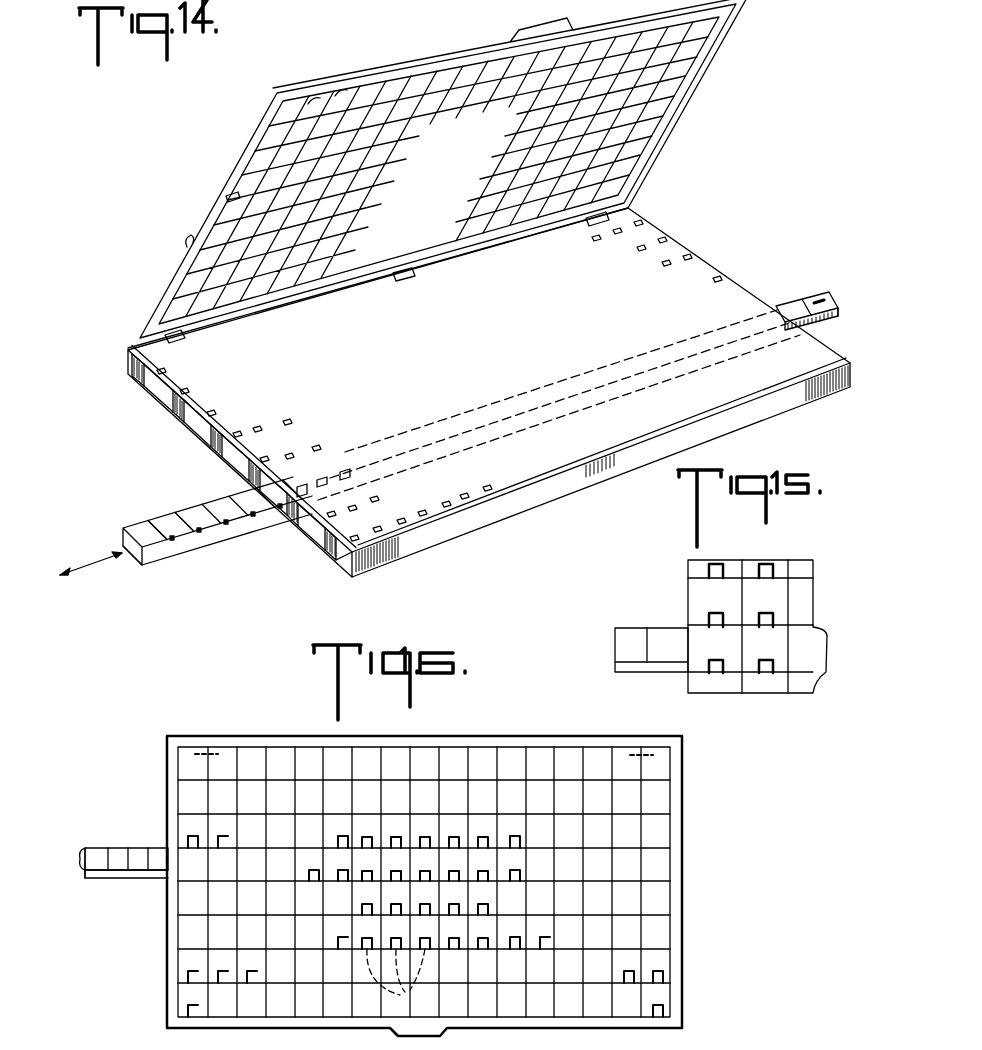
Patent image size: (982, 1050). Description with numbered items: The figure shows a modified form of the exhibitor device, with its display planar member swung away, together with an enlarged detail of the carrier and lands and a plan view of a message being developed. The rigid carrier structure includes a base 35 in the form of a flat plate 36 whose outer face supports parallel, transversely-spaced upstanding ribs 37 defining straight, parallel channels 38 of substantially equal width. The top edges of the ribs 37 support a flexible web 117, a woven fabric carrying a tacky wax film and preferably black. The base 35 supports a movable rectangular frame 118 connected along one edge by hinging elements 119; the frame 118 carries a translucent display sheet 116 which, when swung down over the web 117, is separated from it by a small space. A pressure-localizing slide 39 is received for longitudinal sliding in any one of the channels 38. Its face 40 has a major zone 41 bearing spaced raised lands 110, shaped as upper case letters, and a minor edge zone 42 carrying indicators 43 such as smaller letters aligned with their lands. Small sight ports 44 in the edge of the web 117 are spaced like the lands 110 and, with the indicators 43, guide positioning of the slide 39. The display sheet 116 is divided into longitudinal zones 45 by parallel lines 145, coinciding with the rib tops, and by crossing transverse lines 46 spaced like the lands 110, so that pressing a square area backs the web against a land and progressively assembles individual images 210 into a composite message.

In FIG. 14, the base 35 is at (124, 362).
In FIG. 14, the flat plate 36 is at (320, 558).
In FIG. 14, the upstanding ribs 37 is at (150, 392).
In FIG. 14, the channels 38 is at (200, 455).
In FIG. 14, the slide 39 is at (141, 567).
In FIG. 15, the slide 39 is at (621, 630).
In FIG. 16, the slide 39 is at (85, 880).
In FIG. 14, the face 40 is at (133, 527).
In FIG. 14, the major zone 41 is at (826, 296).
In FIG. 16, the major zone 41 is at (78, 855).
In FIG. 14, the minor edge zone 42 is at (838, 312).
In FIG. 16, the minor edge zone 42 is at (84, 873).
In FIG. 14, the indicators 43 is at (225, 524).
In FIG. 15, the indicators 43 is at (668, 668).
In FIG. 16, the indicators 43 is at (158, 879).
In FIG. 14, the sight ports 44 is at (343, 476).
In FIG. 15, the sight ports 44 is at (767, 676).
In FIG. 16, the sight ports 44 is at (399, 978).
In FIG. 14, the longitudinal zones 45 is at (187, 241).
In FIG. 14, the transverse lines 46 is at (340, 93).
In FIG. 14, the raised lands 110 is at (196, 517).
In FIG. 15, the raised lands 110 is at (670, 631).
In FIG. 16, the raised lands 110 is at (158, 848).
In FIG. 14, the display sheet 116 is at (703, 76).
In FIG. 15, the display sheet 116 is at (800, 596).
In FIG. 16, the display sheet 116 is at (652, 840).
In FIG. 14, the flexible web 117 is at (820, 360).
In FIG. 14, the rectangular frame 118 is at (740, 33).
In FIG. 16, the rectangular frame 118 is at (682, 876).
In FIG. 14, the hinging elements 119 is at (607, 203).
In FIG. 14, the parallel lines 145 is at (238, 193).
In FIG. 15, the individual images 210 is at (766, 644).
In FIG. 16, the individual images 210 is at (484, 814).